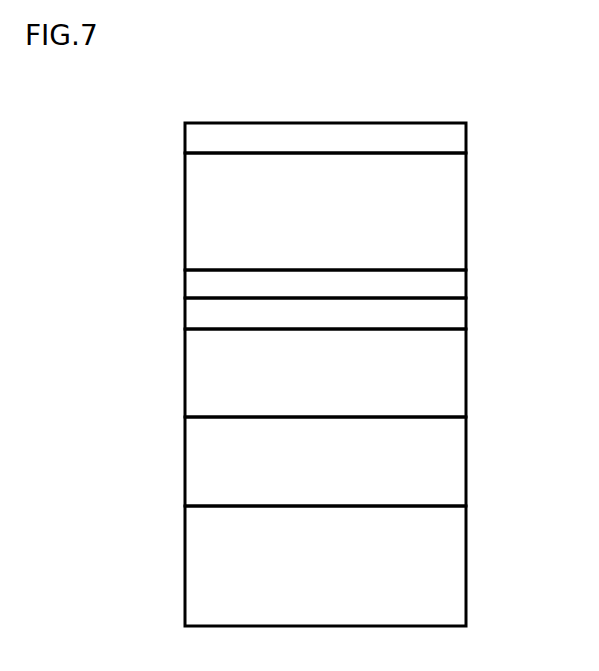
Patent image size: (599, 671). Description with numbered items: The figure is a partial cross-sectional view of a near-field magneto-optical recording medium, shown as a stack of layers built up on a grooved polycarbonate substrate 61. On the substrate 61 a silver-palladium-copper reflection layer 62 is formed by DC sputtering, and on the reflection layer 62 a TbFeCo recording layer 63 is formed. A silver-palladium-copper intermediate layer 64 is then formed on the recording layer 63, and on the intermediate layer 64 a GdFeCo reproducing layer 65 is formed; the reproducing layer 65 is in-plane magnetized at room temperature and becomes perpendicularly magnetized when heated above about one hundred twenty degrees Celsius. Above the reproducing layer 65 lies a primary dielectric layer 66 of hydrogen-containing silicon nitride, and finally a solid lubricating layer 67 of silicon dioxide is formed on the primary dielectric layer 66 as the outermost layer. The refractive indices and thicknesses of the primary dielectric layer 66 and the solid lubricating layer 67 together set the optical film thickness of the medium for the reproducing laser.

The polycarbonate substrate 61 is at (466, 553).
The reflection layer 62 is at (466, 463).
The recording layer 63 is at (466, 373).
The intermediate layer 64 is at (466, 315).
The reproducing layer 65 is at (466, 286).
The primary dielectric layer 66 is at (466, 198).
The solid lubricating layer 67 is at (466, 139).